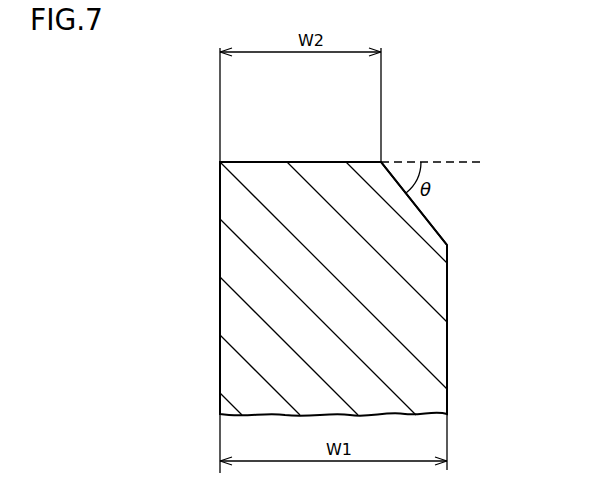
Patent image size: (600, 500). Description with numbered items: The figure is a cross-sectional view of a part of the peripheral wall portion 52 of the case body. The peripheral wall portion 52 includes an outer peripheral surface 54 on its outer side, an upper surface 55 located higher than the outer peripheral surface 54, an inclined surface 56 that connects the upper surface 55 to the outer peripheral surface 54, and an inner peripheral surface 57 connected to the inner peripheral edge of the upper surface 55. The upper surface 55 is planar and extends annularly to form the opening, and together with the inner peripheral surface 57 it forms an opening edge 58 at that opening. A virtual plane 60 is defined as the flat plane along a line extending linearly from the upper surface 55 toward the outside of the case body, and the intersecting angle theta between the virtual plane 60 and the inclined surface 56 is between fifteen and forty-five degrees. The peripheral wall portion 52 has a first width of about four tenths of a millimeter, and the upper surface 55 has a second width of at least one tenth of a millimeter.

The peripheral wall portion 52 is at (248, 332).
The outer peripheral surface 54 is at (449, 313).
The upper surface 55 is at (288, 162).
The inclined surface 56 is at (433, 224).
The inner peripheral surface 57 is at (220, 248).
The opening edge 58 is at (220, 162).
The virtual plane 60 is at (448, 161).